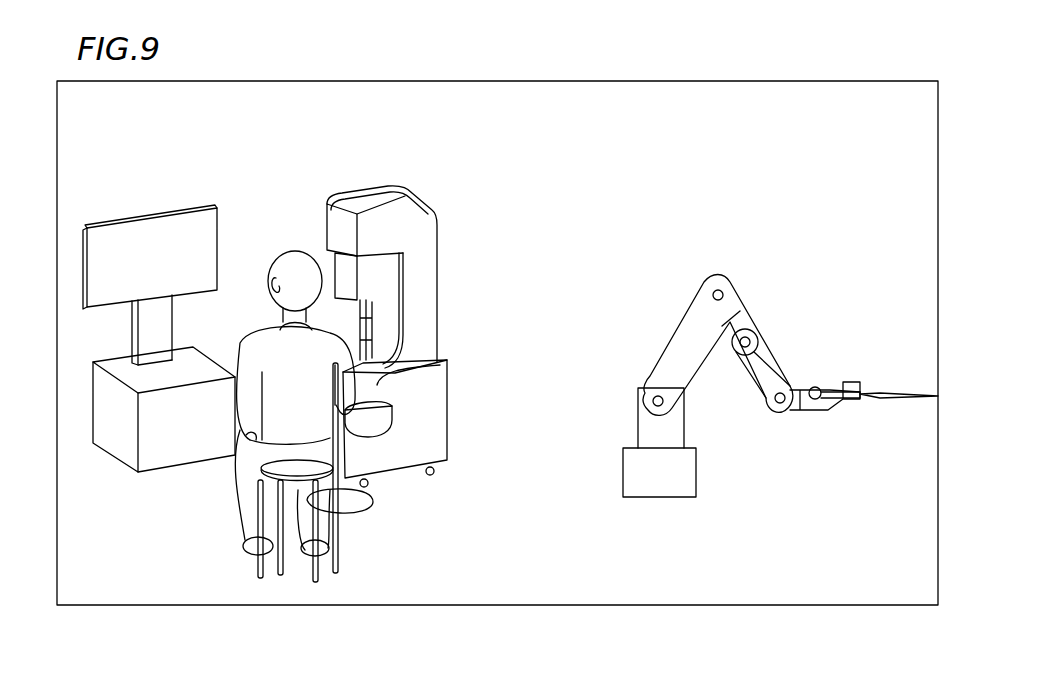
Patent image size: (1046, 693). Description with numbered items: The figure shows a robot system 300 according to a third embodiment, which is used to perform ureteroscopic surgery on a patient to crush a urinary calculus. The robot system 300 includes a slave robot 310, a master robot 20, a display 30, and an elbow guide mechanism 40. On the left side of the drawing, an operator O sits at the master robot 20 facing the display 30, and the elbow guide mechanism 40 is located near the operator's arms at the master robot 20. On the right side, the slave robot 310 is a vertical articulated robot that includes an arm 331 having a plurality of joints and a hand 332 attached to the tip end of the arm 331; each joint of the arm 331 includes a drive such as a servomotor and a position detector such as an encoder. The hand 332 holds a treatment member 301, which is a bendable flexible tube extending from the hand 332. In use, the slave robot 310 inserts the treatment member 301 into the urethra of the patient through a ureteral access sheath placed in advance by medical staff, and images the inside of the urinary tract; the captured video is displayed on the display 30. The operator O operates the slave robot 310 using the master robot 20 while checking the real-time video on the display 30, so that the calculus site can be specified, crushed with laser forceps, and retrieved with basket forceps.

The robot system 300 is at (133, 108).
The display 30 is at (230, 203).
The operator O is at (292, 244).
The master robot 20 is at (463, 221).
The elbow guide mechanism 40 is at (398, 421).
The slave robot 310 is at (780, 325).
The arm 331 is at (753, 304).
The hand 332 is at (868, 374).
The treatment member 301 is at (895, 402).